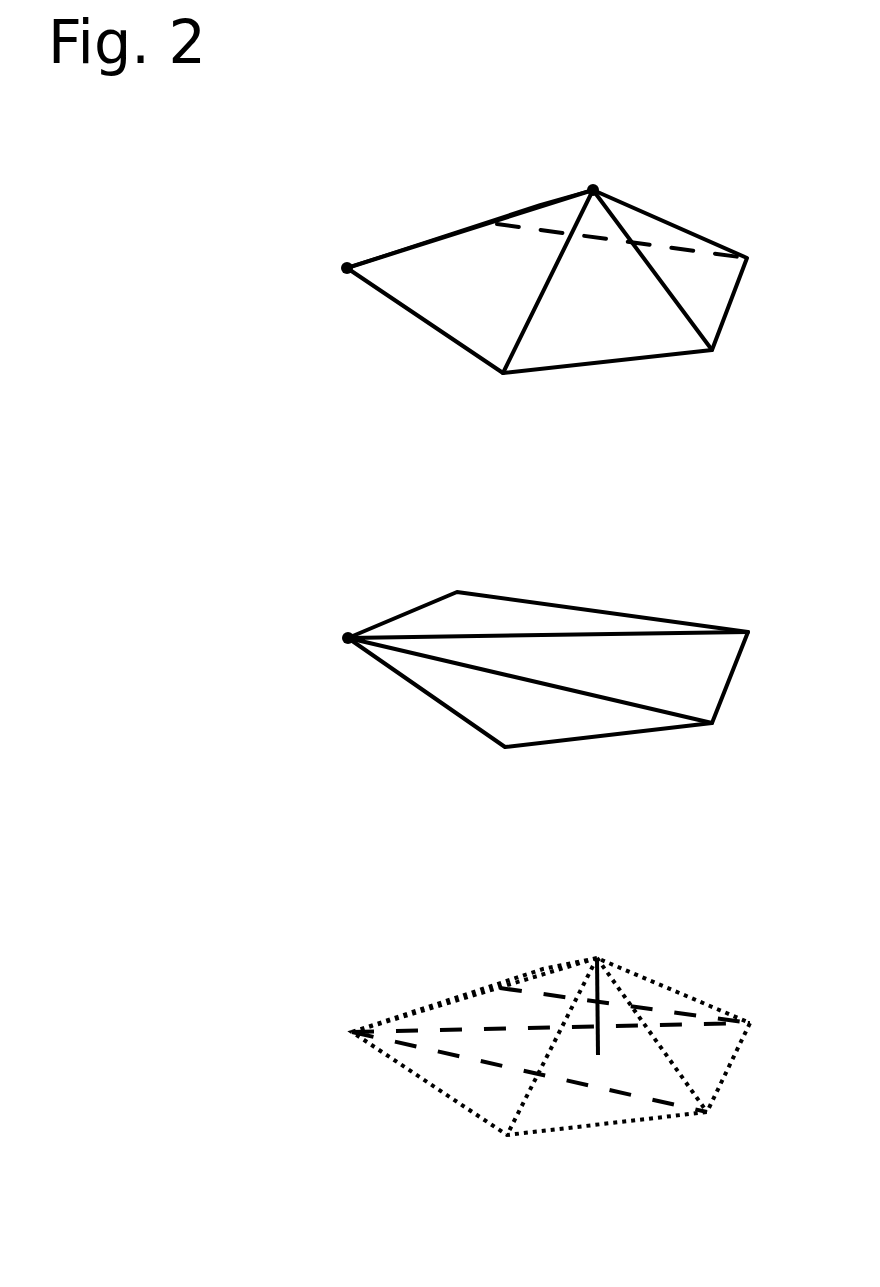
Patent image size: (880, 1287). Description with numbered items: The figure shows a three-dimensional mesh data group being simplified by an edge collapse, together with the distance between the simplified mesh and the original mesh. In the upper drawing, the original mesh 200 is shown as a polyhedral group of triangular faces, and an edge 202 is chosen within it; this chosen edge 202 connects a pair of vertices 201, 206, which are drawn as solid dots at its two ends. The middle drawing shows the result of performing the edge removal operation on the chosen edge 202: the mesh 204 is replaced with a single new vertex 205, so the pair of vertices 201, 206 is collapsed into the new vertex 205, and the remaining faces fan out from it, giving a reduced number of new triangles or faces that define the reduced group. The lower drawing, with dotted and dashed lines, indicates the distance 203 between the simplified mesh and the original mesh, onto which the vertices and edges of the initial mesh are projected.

The mesh 200 is at (702, 173).
The vertex 201 is at (593, 186).
The edge 202 is at (470, 220).
The normal vector 203 is at (599, 1017).
The mesh 204 is at (678, 560).
The single new vertex 205 is at (344, 630).
The vertex 206 is at (342, 272).